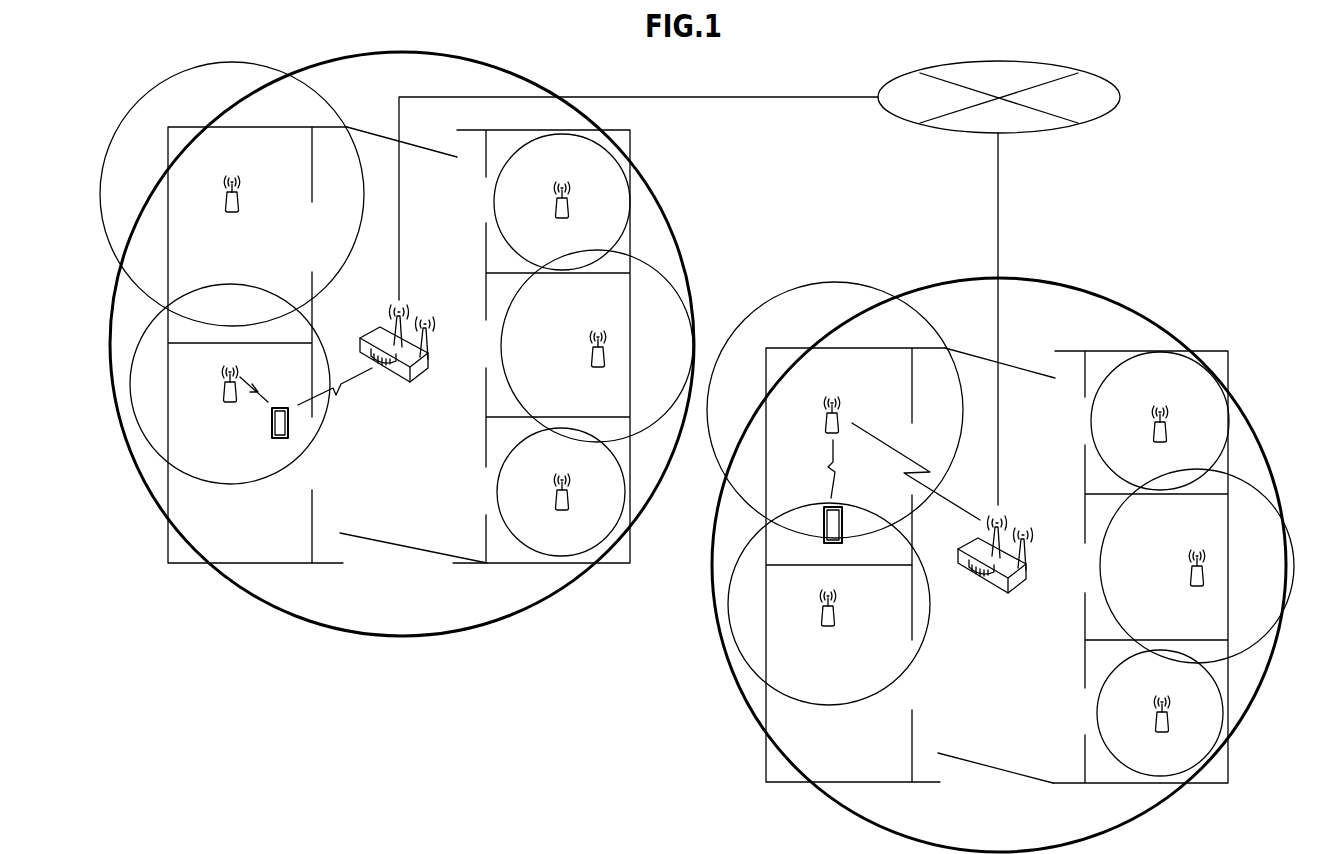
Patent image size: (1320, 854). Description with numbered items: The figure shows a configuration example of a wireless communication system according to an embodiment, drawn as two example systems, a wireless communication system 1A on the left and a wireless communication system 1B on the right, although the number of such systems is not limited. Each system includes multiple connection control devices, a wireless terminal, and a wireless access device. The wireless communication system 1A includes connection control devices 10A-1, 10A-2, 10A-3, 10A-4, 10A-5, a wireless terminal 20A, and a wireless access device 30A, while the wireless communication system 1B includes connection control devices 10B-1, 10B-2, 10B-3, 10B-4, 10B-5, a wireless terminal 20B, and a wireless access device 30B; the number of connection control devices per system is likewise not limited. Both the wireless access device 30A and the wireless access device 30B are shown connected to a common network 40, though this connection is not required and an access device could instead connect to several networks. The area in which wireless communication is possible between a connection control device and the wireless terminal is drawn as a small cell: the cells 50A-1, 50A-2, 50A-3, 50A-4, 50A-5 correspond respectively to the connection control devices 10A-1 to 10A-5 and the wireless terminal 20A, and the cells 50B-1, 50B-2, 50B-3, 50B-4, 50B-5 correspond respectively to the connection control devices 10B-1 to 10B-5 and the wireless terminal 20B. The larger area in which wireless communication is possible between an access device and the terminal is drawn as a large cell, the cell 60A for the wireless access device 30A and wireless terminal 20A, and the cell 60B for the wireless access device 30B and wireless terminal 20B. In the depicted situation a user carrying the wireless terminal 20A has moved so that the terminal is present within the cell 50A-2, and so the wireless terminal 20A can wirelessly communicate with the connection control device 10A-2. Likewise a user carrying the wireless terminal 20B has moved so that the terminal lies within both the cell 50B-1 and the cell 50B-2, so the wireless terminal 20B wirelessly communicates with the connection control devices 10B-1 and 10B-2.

The wireless communication system 1A is at (670, 204).
The wireless communication system 1B is at (1166, 304).
The connection control device 10A-1 is at (236, 213).
The connection control device 10A-2 is at (226, 403).
The connection control device 10A-3 is at (558, 219).
The connection control device 10A-4 is at (594, 368).
The connection control device 10A-5 is at (560, 511).
The connection control device 10B-1 is at (840, 410).
The connection control device 10B-2 is at (824, 627).
The connection control device 10B-3 is at (1156, 443).
The connection control device 10B-4 is at (1193, 587).
The connection control device 10B-5 is at (1160, 733).
The wireless terminal 20A is at (280, 440).
The wireless terminal 20B is at (853, 528).
The wireless access device 30A is at (412, 384).
The wireless access device 30B is at (1010, 595).
The network 40 is at (1122, 98).
The cell 50A-1 is at (330, 100).
The cell 50A-2 is at (315, 440).
The cell 50A-3 is at (494, 205).
The cell 50A-4 is at (513, 297).
The cell 50A-5 is at (497, 490).
The cell 50B-1 is at (870, 283).
The cell 50B-2 is at (912, 660).
The cell 50B-3 is at (1091, 428).
The cell 50B-4 is at (1115, 516).
The cell 50B-5 is at (1098, 708).
The cell 60A is at (517, 78).
The cell 60B is at (1073, 283).